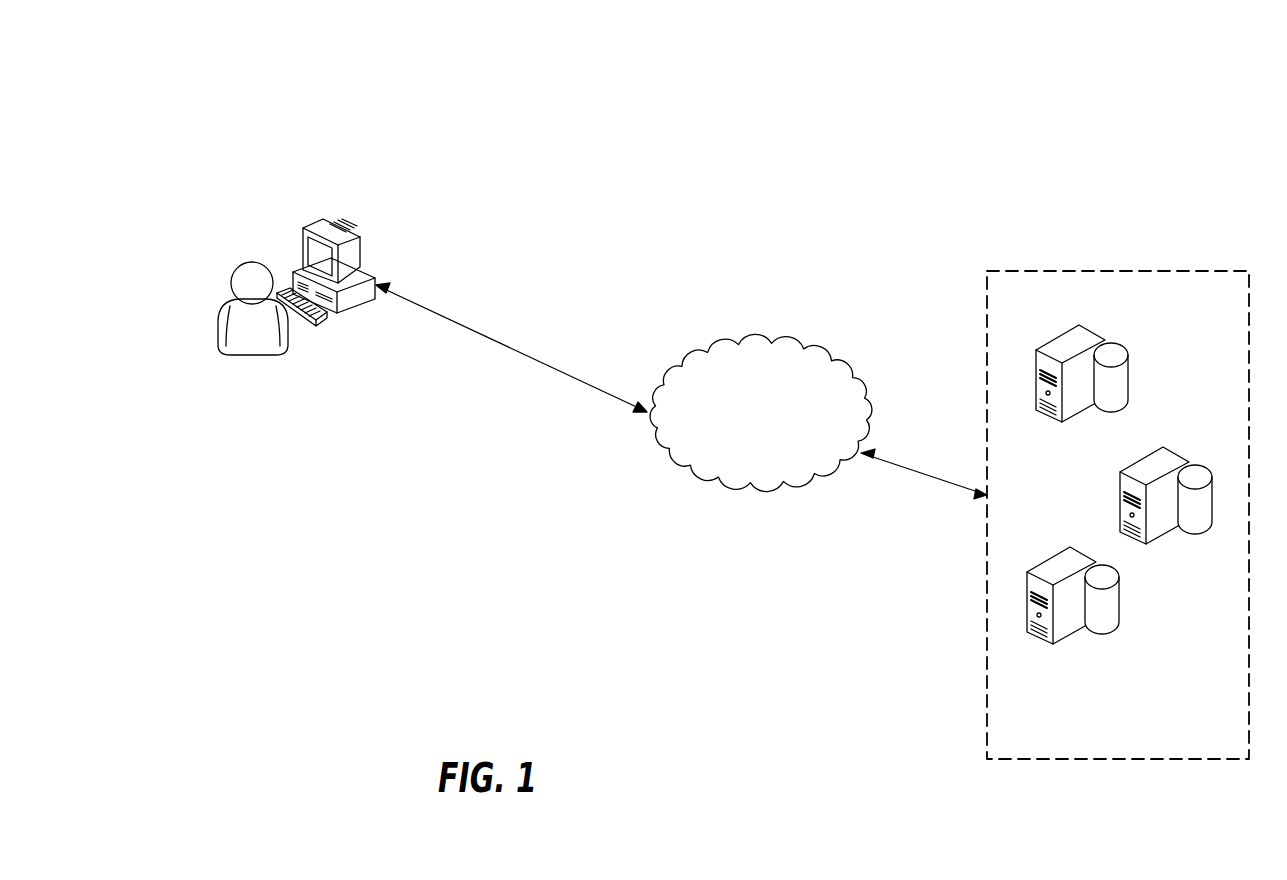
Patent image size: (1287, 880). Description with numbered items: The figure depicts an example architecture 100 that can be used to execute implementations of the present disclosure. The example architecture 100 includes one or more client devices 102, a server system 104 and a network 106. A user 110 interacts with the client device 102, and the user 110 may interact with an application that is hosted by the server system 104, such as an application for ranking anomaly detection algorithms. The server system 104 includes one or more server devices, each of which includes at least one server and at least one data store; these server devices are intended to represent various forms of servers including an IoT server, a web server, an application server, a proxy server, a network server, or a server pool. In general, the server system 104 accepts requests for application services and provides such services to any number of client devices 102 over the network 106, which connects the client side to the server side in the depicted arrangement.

The example architecture 100 is at (612, 104).
The client device 102 is at (304, 228).
The server system 104 is at (1122, 271).
The network 106 is at (762, 343).
The user 110 is at (253, 356).